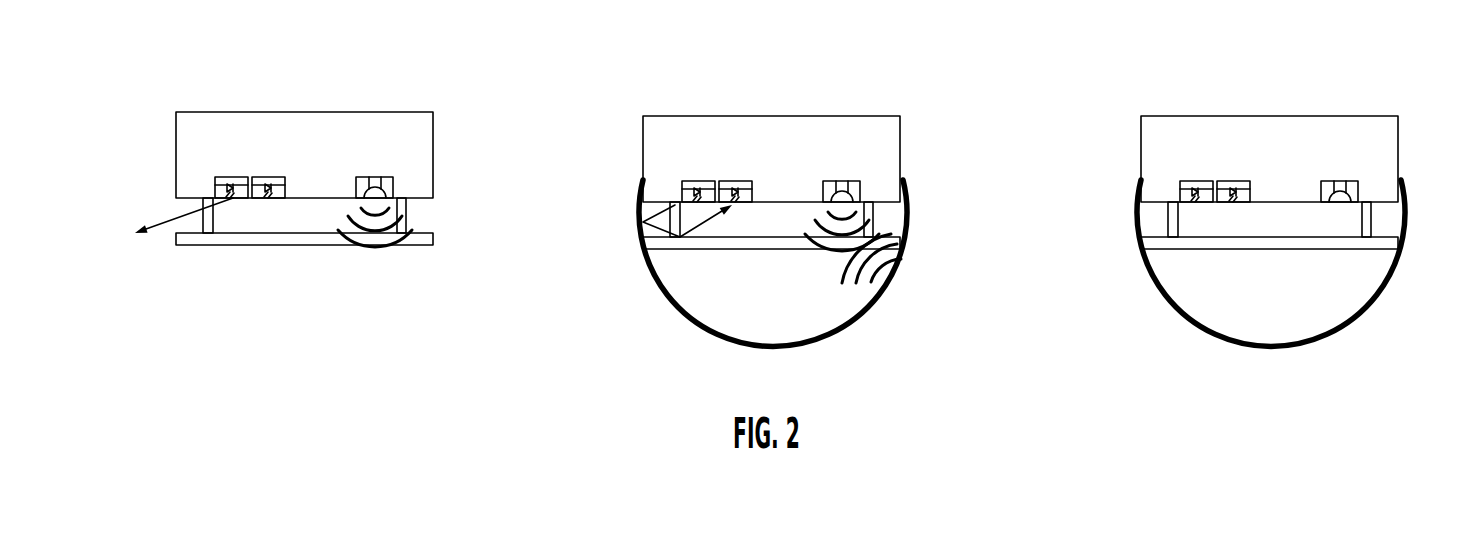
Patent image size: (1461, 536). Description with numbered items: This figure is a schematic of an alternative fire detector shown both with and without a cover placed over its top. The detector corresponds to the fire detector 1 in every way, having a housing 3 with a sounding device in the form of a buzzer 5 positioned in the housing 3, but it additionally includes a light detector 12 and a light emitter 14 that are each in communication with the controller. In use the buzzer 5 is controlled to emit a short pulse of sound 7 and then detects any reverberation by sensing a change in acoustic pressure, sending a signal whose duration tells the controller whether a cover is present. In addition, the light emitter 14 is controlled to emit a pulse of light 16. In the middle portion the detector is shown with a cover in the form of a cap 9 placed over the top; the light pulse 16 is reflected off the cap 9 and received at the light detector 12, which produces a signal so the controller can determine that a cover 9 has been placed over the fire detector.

The fire detector 1 is at (785, 204).
The housing 3 is at (190, 141).
The buzzer 5 is at (381, 196).
The pulse of sound 7 is at (890, 264).
The cap 9 is at (687, 318).
The light detector 12 is at (252, 178).
The light emitter 14 is at (232, 178).
The pulse of light 16 is at (162, 224).